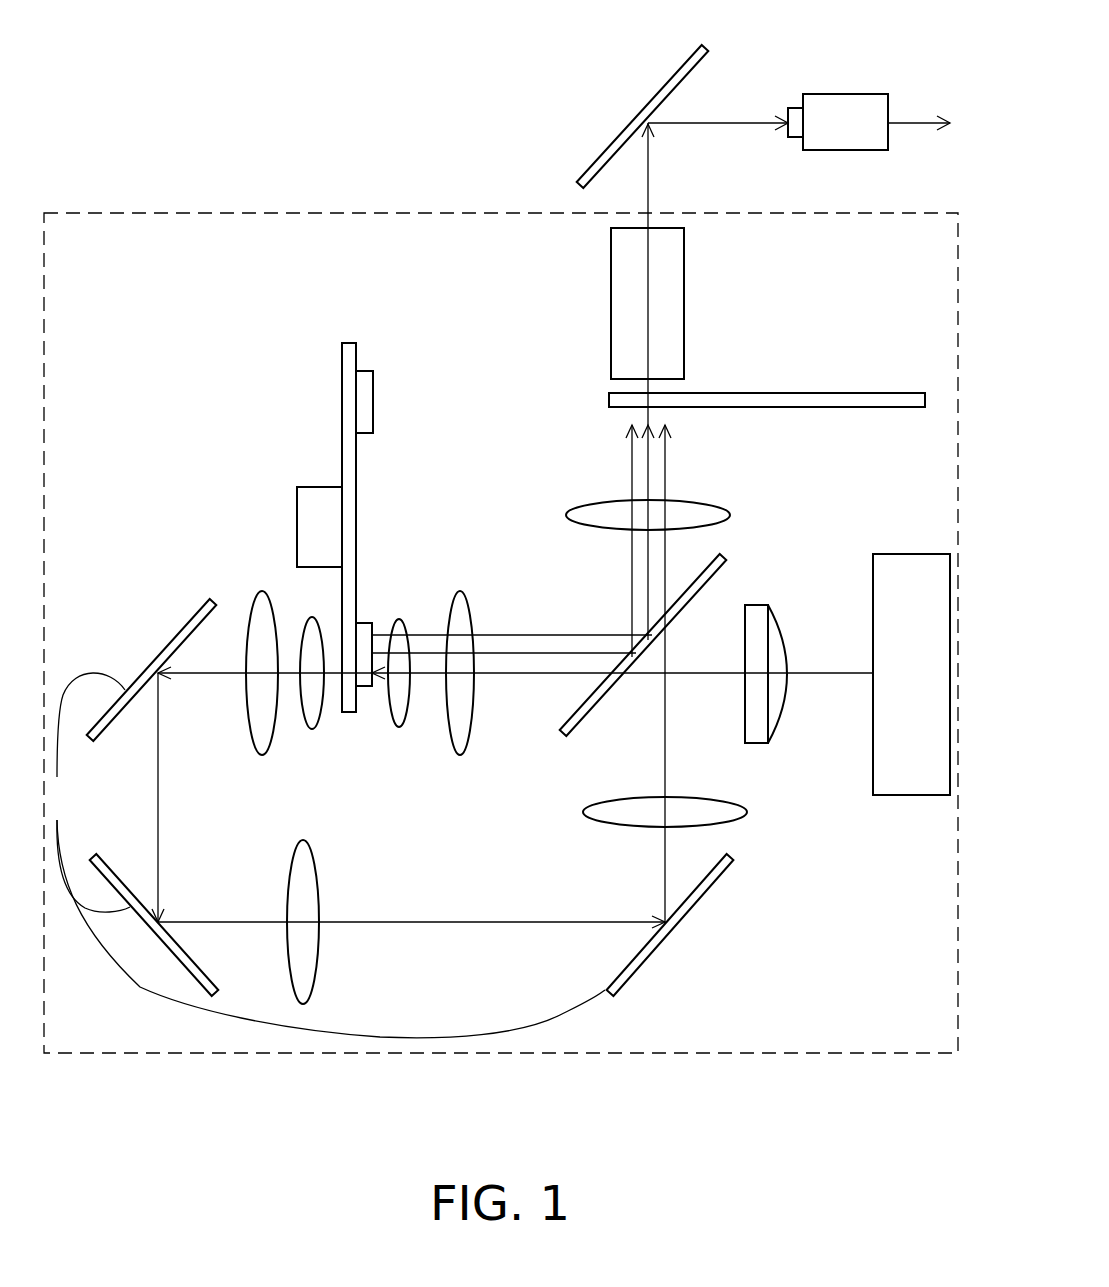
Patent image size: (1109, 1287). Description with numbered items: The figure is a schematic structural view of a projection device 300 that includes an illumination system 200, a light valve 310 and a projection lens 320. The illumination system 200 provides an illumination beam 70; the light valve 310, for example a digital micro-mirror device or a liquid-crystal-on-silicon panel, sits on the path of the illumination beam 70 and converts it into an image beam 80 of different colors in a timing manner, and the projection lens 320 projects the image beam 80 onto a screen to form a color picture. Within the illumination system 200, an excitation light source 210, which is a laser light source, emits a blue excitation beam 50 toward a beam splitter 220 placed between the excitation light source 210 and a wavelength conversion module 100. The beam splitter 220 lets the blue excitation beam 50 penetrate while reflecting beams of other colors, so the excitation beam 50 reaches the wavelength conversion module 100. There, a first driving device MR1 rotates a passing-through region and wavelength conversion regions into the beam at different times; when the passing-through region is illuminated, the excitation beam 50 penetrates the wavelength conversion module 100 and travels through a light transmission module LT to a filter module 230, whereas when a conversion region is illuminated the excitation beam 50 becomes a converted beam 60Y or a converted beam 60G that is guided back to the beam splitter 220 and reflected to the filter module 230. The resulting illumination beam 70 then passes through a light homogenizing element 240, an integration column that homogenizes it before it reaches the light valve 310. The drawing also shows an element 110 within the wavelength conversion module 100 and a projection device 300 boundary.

The projection device 300 is at (938, 1108).
The illumination system 200 is at (248, 193).
The wavelength conversion module 100 is at (417, 343).
The light valve / substrate 110 is at (342, 402).
The first driving device MR1 is at (310, 525).
The excitation light source 210 is at (912, 797).
The beam splitter 220 is at (720, 573).
The filter module 230 is at (872, 408).
The light homogenizing element 240 is at (611, 305).
The light valve 310 is at (665, 83).
The projection lens 320 is at (843, 94).
The image beam 80 is at (733, 121).
The illumination beam 70 is at (650, 188).
The converted beam 60Y is at (521, 541).
The converted beam 60G is at (648, 480).
The excitation beam 50 is at (665, 476).
The light transmission module LT is at (326, 855).